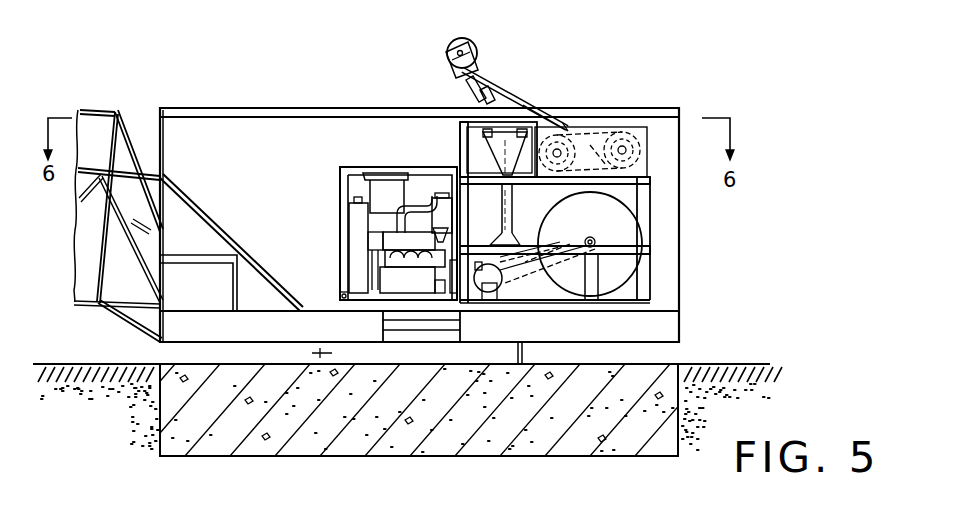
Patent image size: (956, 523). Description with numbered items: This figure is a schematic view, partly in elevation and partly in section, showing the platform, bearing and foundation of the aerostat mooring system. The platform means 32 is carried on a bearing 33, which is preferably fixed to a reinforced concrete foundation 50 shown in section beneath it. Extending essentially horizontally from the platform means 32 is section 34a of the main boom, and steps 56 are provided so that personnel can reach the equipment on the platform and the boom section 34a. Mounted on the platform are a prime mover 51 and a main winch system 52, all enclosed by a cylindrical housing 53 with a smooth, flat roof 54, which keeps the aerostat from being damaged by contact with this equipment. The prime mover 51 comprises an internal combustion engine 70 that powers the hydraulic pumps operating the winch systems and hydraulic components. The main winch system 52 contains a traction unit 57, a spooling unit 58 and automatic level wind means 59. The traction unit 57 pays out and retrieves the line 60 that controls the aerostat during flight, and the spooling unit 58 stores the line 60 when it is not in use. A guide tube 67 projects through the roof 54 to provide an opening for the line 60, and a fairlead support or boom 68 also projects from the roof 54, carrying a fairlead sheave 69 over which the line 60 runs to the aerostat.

The platform means 32 is at (658, 327).
The bearing 33 is at (302, 346).
The horizontal section of main boom 34a is at (80, 303).
The reinforced concrete foundation 50 is at (313, 433).
The prime mover 51 is at (340, 193).
The main winch system 52 is at (651, 208).
The cylindrical housing 53 is at (620, 108).
The roof 54 is at (198, 108).
The steps 56 is at (462, 330).
The traction unit 57 is at (648, 148).
The spooling unit 58 is at (622, 270).
The automatic level wind means 59 is at (493, 210).
The line 60 is at (510, 90).
The guide tube 67 is at (524, 107).
The fairlead support or boom 68 is at (458, 103).
The fairlead sheave 69 is at (475, 38).
The internal combustion engine 70 is at (393, 278).